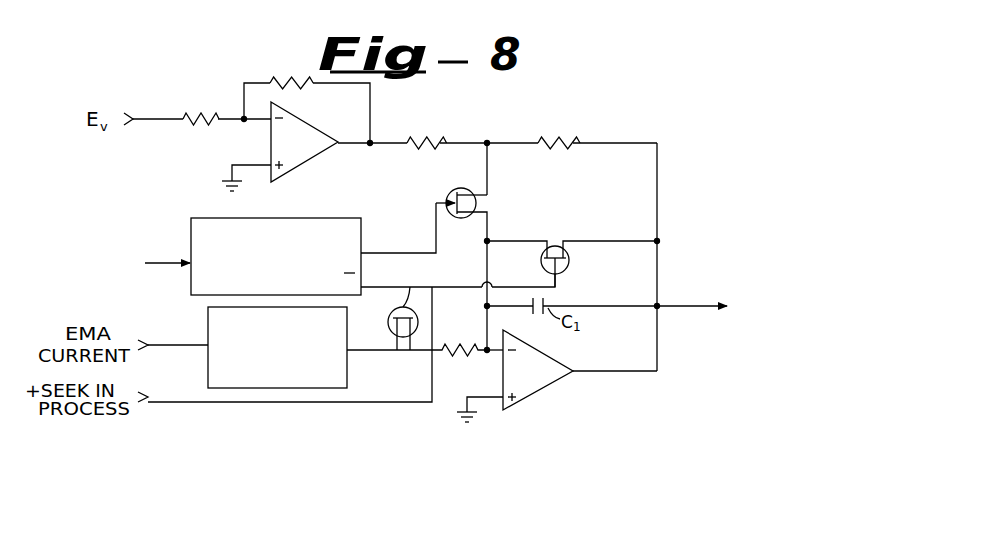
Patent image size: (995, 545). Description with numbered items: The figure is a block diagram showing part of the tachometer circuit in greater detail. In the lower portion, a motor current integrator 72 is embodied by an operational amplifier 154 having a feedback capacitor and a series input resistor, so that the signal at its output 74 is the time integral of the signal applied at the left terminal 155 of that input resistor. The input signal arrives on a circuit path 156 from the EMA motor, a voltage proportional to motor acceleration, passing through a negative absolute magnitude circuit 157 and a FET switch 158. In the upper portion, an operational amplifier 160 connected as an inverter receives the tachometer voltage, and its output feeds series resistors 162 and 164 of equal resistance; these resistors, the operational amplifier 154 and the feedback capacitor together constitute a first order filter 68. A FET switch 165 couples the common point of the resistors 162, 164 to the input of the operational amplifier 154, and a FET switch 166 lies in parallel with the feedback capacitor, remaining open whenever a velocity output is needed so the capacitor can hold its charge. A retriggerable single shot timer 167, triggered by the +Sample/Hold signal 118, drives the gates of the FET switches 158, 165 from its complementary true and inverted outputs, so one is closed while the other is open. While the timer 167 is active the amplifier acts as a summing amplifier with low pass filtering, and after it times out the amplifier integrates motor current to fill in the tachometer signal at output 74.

The filter 68 is at (540, 118).
The motor current integrator 72 is at (571, 385).
The output 74 is at (695, 310).
The +Sample/Hold signal 118 is at (108, 260).
The operational amplifier 154 is at (556, 361).
The left terminal 155 is at (437, 352).
The circuit path 156 is at (181, 344).
The negative absolute magnitude circuit 157 is at (347, 376).
The FET switch 158 is at (411, 304).
The operational amplifier 160 is at (308, 118).
The resistor 162 is at (423, 157).
The resistor 164 is at (556, 150).
The FET switch 165 is at (452, 195).
The FET switch 166 is at (569, 266).
The retriggerable single shot timer 167 is at (300, 218).